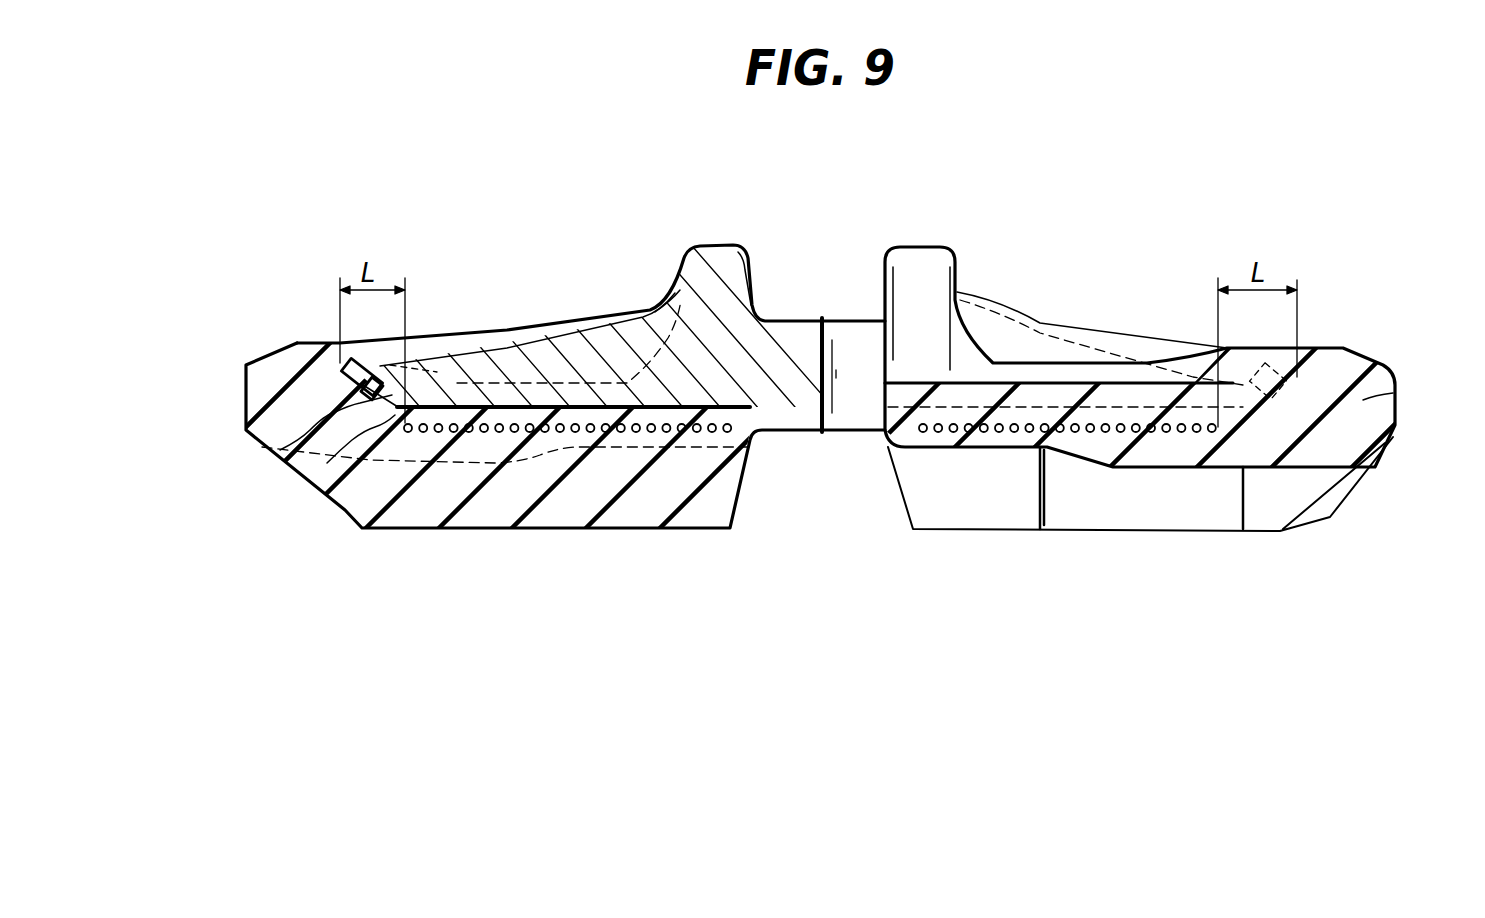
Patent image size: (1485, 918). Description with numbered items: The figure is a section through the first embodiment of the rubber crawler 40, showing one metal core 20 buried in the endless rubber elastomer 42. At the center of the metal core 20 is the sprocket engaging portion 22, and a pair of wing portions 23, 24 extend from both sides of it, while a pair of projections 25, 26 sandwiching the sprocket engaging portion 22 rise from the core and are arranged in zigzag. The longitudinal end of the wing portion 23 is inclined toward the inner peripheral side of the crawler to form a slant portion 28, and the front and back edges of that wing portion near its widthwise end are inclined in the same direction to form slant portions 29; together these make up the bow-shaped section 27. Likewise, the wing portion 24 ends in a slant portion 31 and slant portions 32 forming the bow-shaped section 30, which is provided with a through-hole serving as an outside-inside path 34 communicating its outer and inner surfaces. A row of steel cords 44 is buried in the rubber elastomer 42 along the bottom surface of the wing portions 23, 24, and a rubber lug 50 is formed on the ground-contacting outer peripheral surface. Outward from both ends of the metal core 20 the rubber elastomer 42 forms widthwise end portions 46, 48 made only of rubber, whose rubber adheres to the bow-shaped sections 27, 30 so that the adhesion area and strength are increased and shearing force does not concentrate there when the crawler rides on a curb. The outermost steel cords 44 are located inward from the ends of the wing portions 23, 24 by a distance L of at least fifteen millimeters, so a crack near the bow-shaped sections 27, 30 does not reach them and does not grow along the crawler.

The metal core 20 is at (893, 258).
The sprocket engaging portion 22 is at (817, 318).
The wing portion 23 is at (957, 395).
The wing portion 24 is at (527, 390).
The projection 25 is at (930, 258).
The projection 26 is at (718, 253).
The bow-shaped section 27 is at (1290, 396).
The slant portion 28 is at (1290, 380).
The slant portions 29 is at (1243, 385).
The bow-shaped section 30 is at (332, 372).
The slant portion 31 is at (327, 463).
The slant portions 32 is at (418, 365).
The outside-inside path 34 is at (280, 450).
The rubber crawler 40 is at (1347, 348).
The rubber elastomer 42 is at (551, 328).
The steel cords 44 is at (638, 432).
The widthwise end portion 46 is at (1393, 393).
The widthwise end portion 48 is at (282, 402).
The rubber lug 50 is at (427, 502).